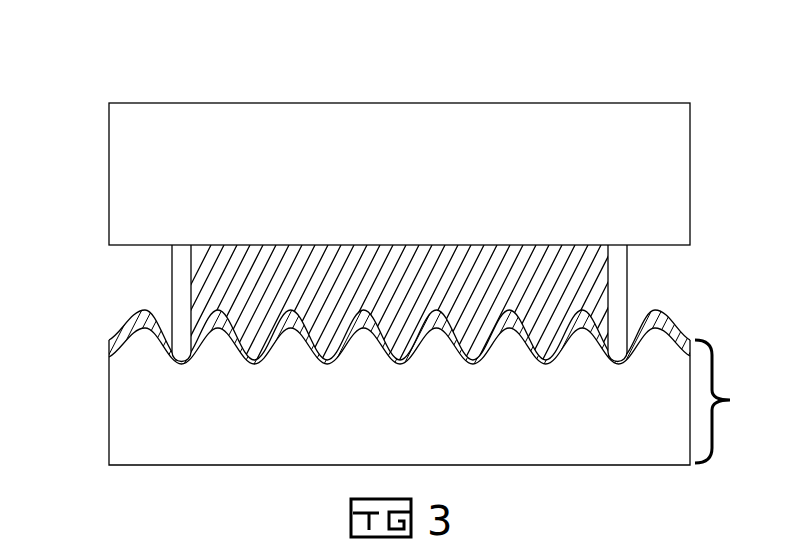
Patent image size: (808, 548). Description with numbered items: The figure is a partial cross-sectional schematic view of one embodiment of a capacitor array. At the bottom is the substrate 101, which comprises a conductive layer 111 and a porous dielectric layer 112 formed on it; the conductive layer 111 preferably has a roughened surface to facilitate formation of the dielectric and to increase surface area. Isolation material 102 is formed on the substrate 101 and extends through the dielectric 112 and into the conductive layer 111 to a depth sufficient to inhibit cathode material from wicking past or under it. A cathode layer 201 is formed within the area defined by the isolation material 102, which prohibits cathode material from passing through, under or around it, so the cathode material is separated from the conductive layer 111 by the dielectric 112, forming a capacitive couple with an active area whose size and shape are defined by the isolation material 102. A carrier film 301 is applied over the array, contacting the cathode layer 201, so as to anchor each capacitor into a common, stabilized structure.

The substrate 101 is at (734, 401).
The isolation material 102 is at (183, 303).
The conductive layer 111 is at (123, 408).
The porous dielectric layer 112 is at (128, 328).
The cathode layer 201 is at (578, 262).
The carrier film 301 is at (342, 145).